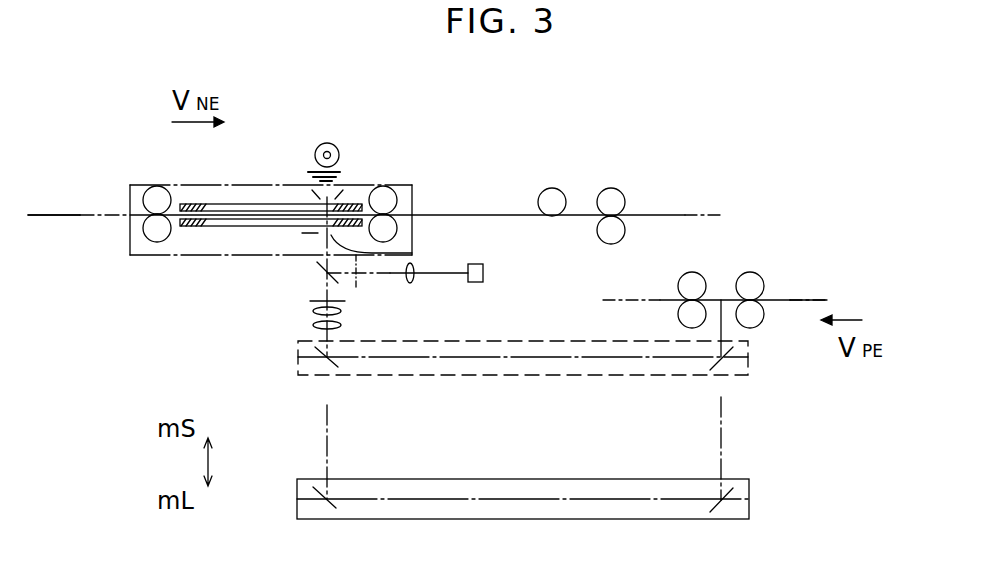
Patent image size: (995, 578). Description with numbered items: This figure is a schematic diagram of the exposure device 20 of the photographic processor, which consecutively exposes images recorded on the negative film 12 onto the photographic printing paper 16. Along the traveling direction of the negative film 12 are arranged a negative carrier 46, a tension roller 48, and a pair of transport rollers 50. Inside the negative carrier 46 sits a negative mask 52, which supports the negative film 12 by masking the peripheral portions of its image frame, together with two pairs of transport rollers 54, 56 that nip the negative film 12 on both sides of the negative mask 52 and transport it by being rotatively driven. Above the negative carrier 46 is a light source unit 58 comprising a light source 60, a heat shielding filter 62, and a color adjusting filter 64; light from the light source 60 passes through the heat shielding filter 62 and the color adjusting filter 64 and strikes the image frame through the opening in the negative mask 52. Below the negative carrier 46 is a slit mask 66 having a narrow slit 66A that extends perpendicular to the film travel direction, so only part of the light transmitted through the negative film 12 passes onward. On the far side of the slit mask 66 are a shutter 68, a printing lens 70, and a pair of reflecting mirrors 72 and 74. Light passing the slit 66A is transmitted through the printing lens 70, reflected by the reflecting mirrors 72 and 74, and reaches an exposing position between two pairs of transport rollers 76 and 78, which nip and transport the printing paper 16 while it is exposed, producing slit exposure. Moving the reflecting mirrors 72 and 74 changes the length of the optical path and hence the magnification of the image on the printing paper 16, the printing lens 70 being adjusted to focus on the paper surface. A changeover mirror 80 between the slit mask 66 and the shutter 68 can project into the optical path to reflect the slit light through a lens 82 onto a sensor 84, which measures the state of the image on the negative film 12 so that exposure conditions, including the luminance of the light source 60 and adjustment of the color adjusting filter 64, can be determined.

The negative film 12 is at (80, 215).
The photographic printing paper 16 is at (822, 297).
The exposure device 20 is at (520, 106).
The negative carrier 46 is at (143, 256).
The tension roller 48 is at (552, 194).
The pair of transport rollers 50 is at (614, 192).
The negative mask 52 is at (192, 203).
The pair of transport rollers 54 is at (160, 240).
The pair of transport rollers 56 is at (393, 187).
The light source unit 58 is at (318, 139).
The light source 60 is at (331, 150).
The heat shielding filter 62 is at (340, 164).
The color adjusting filter 64 is at (306, 170).
The slit mask 66 is at (308, 238).
The slit 66A is at (412, 253).
The shutter 68 is at (310, 300).
The printing lens 70 is at (311, 325).
The reflecting mirror 72 is at (316, 352).
The reflecting mirror 74 is at (733, 348).
The pair of transport rollers 76 is at (693, 280).
The pair of transport rollers 78 is at (752, 280).
The changeover mirror 80 is at (336, 282).
The lens for a sensor 82 is at (416, 283).
The sensor 84 is at (484, 273).